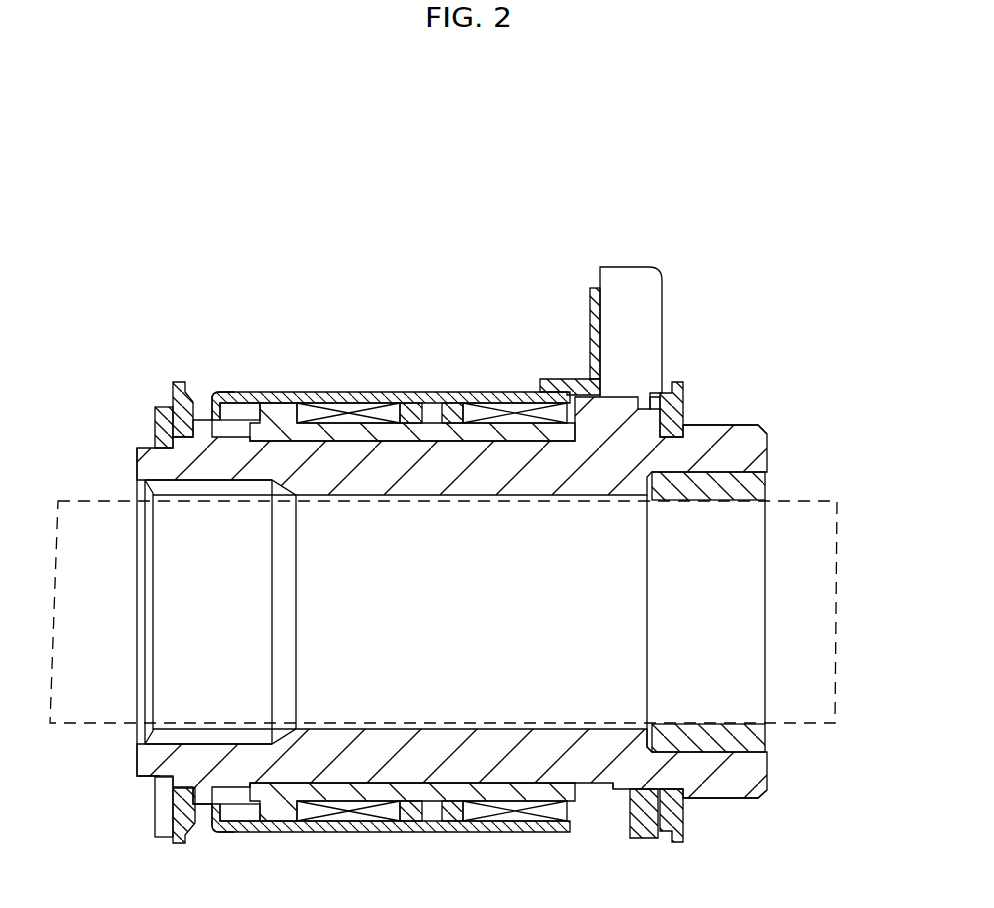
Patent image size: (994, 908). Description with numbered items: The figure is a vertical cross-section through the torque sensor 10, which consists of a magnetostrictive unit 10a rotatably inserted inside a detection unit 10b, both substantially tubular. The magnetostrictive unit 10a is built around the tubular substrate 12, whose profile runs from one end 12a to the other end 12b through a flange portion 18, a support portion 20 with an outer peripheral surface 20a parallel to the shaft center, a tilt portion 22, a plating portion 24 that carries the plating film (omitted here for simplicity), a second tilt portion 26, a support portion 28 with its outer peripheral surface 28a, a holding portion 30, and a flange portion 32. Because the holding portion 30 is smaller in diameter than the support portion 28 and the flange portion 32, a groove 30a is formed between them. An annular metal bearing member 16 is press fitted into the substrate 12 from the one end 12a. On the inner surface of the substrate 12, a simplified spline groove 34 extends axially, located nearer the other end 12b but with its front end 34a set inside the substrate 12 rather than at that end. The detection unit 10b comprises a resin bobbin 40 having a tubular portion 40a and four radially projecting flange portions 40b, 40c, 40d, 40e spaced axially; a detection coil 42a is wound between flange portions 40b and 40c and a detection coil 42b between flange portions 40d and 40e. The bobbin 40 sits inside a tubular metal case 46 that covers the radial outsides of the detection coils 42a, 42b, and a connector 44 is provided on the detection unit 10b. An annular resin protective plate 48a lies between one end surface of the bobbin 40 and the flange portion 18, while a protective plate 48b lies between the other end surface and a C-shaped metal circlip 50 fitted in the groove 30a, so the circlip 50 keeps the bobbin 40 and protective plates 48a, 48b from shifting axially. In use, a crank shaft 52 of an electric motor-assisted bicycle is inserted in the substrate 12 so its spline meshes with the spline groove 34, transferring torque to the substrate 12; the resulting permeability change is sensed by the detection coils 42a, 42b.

The torque sensor 10 is at (227, 273).
The magnetostrictive unit 10a is at (733, 415).
The detection unit 10b is at (683, 311).
The substrate 12 is at (765, 432).
The one end 12a is at (768, 452).
The other end 12b is at (137, 462).
The bearing member 16 is at (755, 487).
The flange portion 18 is at (737, 778).
The support portion 20 is at (640, 767).
The outer peripheral surface 20a is at (632, 790).
The tilt portion 22 is at (618, 778).
The plating portion 24 is at (458, 740).
The tilt portion 26 is at (250, 783).
The support portion 28 is at (203, 767).
The outer peripheral surface 28a is at (228, 795).
The holding portion 30 is at (165, 776).
The groove 30a is at (165, 790).
The flange portion 32 is at (140, 777).
The spline groove 34 is at (178, 485).
The front end 34a is at (140, 573).
The bobbin 40 is at (205, 415).
The tubular portion 40a is at (383, 437).
The flange portion 40b is at (575, 385).
The flange portion 40c is at (452, 415).
The flange portion 40d is at (410, 415).
The flange portion 40e is at (277, 407).
The detection coil 42a is at (505, 405).
The detection coil 42b is at (342, 405).
The connector 44 is at (652, 285).
The case 46 is at (233, 395).
The protective plate 48a is at (678, 382).
The protective plate 48b is at (178, 382).
The circlip 50 is at (167, 410).
The crank shaft 52 is at (835, 723).